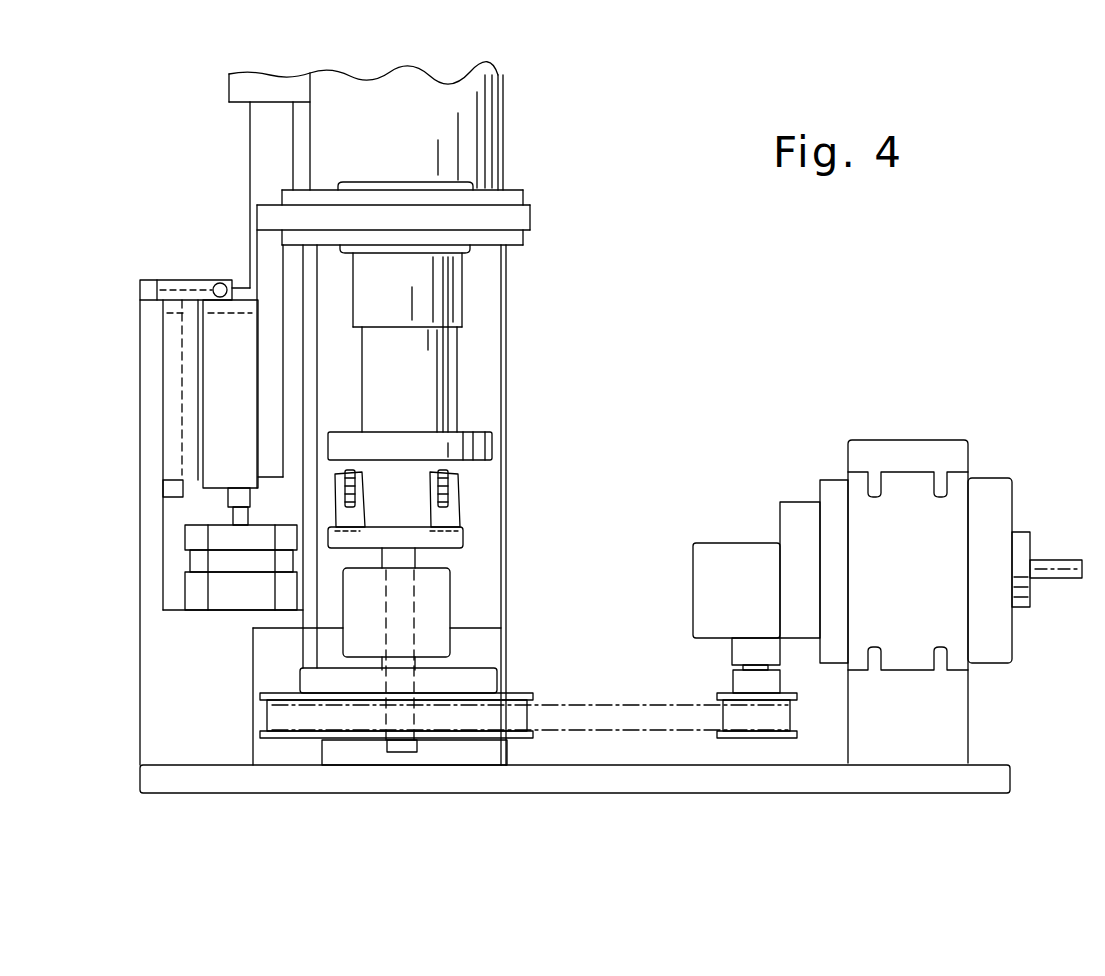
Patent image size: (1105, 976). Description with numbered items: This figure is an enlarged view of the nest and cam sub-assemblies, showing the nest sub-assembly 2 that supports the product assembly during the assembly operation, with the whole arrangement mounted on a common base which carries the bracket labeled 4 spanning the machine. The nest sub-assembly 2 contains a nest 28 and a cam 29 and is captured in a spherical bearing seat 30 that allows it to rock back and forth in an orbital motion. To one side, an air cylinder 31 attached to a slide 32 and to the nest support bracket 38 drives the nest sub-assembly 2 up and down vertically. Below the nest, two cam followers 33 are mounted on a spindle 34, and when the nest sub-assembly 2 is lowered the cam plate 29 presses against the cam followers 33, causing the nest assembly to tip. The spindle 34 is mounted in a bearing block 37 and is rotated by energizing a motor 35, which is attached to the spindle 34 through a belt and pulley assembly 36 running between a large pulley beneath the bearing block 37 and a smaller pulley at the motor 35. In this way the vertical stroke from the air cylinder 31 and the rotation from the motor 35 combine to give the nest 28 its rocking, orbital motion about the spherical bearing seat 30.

The nest sub-assembly 2 is at (573, 185).
The apparatus base assembly 4 is at (147, 878).
The nest 28 is at (472, 185).
The cam 29 is at (492, 450).
The spherical bearing seat 30 is at (318, 188).
The air cylinder 31 is at (228, 612).
The slide 32 is at (175, 292).
The cam followers 33 is at (440, 475).
The spindle 34 is at (415, 612).
The motor 35 is at (888, 440).
The belt and pulley assembly 36 is at (793, 807).
The bearing block 37 is at (450, 598).
The nest support bracket 38 is at (265, 205).